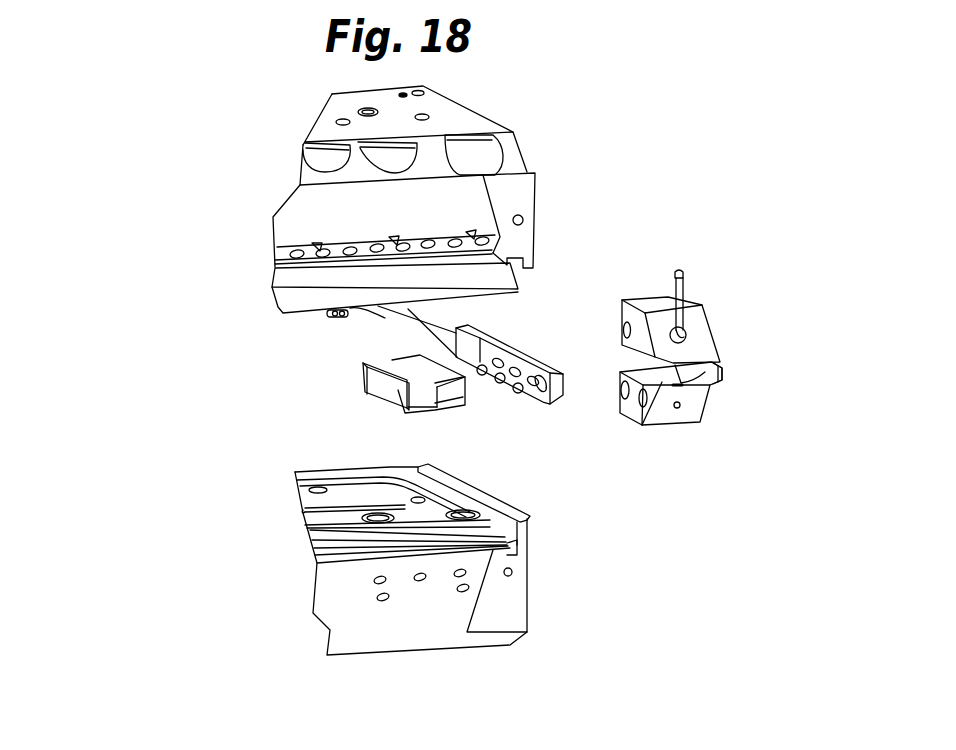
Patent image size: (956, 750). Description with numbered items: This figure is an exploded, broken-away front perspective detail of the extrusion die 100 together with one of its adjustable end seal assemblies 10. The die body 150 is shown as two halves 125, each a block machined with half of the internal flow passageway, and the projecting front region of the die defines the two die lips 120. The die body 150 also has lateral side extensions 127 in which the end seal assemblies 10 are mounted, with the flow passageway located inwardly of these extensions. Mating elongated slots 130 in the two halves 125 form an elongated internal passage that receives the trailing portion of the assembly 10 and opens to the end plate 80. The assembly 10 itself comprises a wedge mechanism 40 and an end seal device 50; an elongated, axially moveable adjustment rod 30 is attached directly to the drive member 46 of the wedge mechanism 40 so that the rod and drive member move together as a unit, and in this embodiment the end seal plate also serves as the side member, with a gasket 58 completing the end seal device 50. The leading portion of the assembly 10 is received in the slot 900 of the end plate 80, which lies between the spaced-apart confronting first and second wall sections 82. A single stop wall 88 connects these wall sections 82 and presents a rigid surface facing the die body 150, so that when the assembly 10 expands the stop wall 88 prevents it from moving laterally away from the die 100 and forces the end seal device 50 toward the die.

The adjustable end seal assembly 10 is at (575, 427).
The adjustment rod 30 is at (402, 317).
The wedge mechanism 40 is at (562, 408).
The drive member 46 is at (514, 352).
The end seal device 50 is at (425, 352).
The gasket 58 is at (370, 377).
The end plate 80 is at (703, 333).
The first and second wall sections 82 is at (718, 360).
The stop wall 88 is at (724, 373).
The extrusion die 100 is at (533, 155).
The die lips 120 is at (288, 293).
The die body halves 125 is at (512, 147).
The lateral side extensions 127 is at (525, 193).
The elongated slots 130 is at (518, 273).
The die body 150 is at (452, 113).
The slot 900 is at (606, 351).